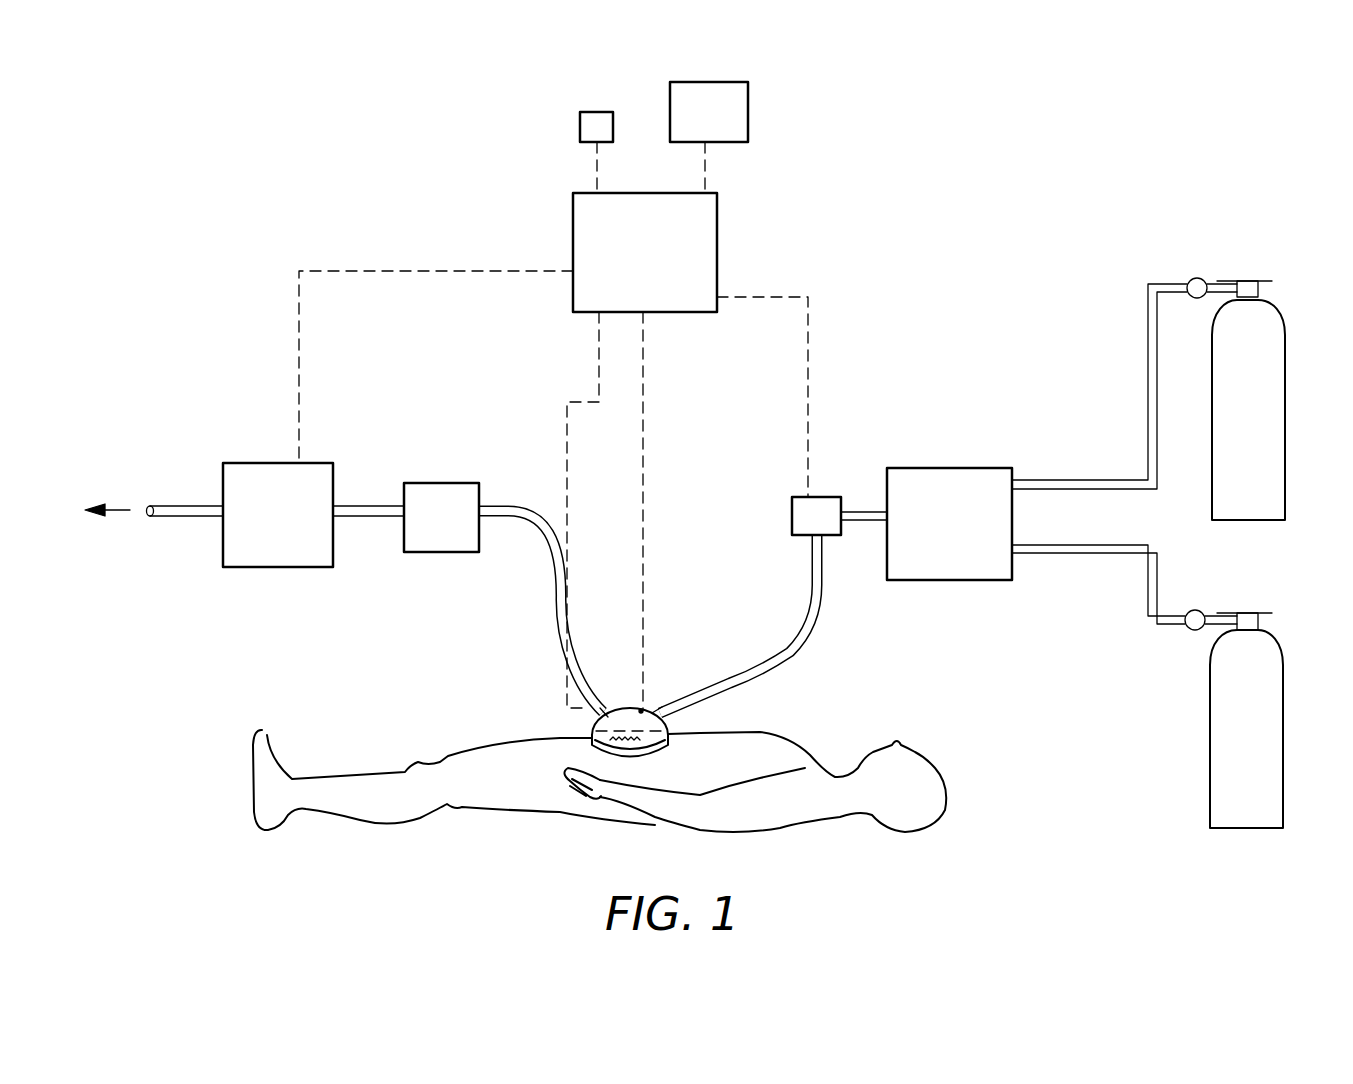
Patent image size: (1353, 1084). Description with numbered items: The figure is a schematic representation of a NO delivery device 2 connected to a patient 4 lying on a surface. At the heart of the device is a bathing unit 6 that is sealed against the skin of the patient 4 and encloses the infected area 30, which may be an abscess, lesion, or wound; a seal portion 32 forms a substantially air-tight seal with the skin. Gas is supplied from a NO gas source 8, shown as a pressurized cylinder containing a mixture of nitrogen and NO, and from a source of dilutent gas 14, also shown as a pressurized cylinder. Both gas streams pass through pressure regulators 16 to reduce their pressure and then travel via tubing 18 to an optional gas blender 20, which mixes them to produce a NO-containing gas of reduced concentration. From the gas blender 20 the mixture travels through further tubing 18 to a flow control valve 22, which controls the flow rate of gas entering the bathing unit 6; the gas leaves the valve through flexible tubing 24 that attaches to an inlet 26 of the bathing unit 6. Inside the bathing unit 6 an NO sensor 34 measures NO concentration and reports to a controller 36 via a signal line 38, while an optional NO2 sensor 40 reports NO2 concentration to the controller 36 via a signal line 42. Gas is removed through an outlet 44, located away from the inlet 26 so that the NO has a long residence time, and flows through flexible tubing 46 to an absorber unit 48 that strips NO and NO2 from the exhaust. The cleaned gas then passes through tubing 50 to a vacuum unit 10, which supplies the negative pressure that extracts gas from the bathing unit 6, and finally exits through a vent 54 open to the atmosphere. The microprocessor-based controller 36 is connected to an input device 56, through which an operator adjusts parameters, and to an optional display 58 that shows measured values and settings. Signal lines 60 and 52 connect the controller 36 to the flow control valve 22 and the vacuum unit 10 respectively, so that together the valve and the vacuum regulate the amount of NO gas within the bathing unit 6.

The NO delivery device 2 is at (893, 218).
The patient 4 is at (925, 823).
The bathing unit 6 is at (621, 696).
The NO gas source 8 is at (1275, 312).
The vacuum unit 10 is at (318, 465).
The source of dilutent gas 14 is at (1275, 645).
The pressure regulators 16 is at (1200, 278).
The tubing 18 is at (1082, 478).
The gas blender 20 is at (985, 468).
The flow control valve 22 is at (822, 497).
The flexible tubing 24 is at (786, 638).
The inlet 26 is at (654, 711).
The infected area 30 is at (670, 745).
The seal portion 32 is at (594, 746).
The NO sensor 34 is at (640, 710).
The controller 36 is at (717, 222).
The signal line 38 is at (645, 432).
The NO2 sensor 40 is at (585, 727).
The signal line 42 is at (567, 474).
The outlet 44 is at (599, 668).
The flexible tubing 46 is at (543, 537).
The absorber unit 48 is at (462, 483).
The tubing 50 is at (365, 503).
The signal line 52 is at (299, 336).
The vent 54 is at (150, 516).
The input device 56 is at (590, 112).
The display 58 is at (732, 82).
The signal line 60 is at (828, 320).